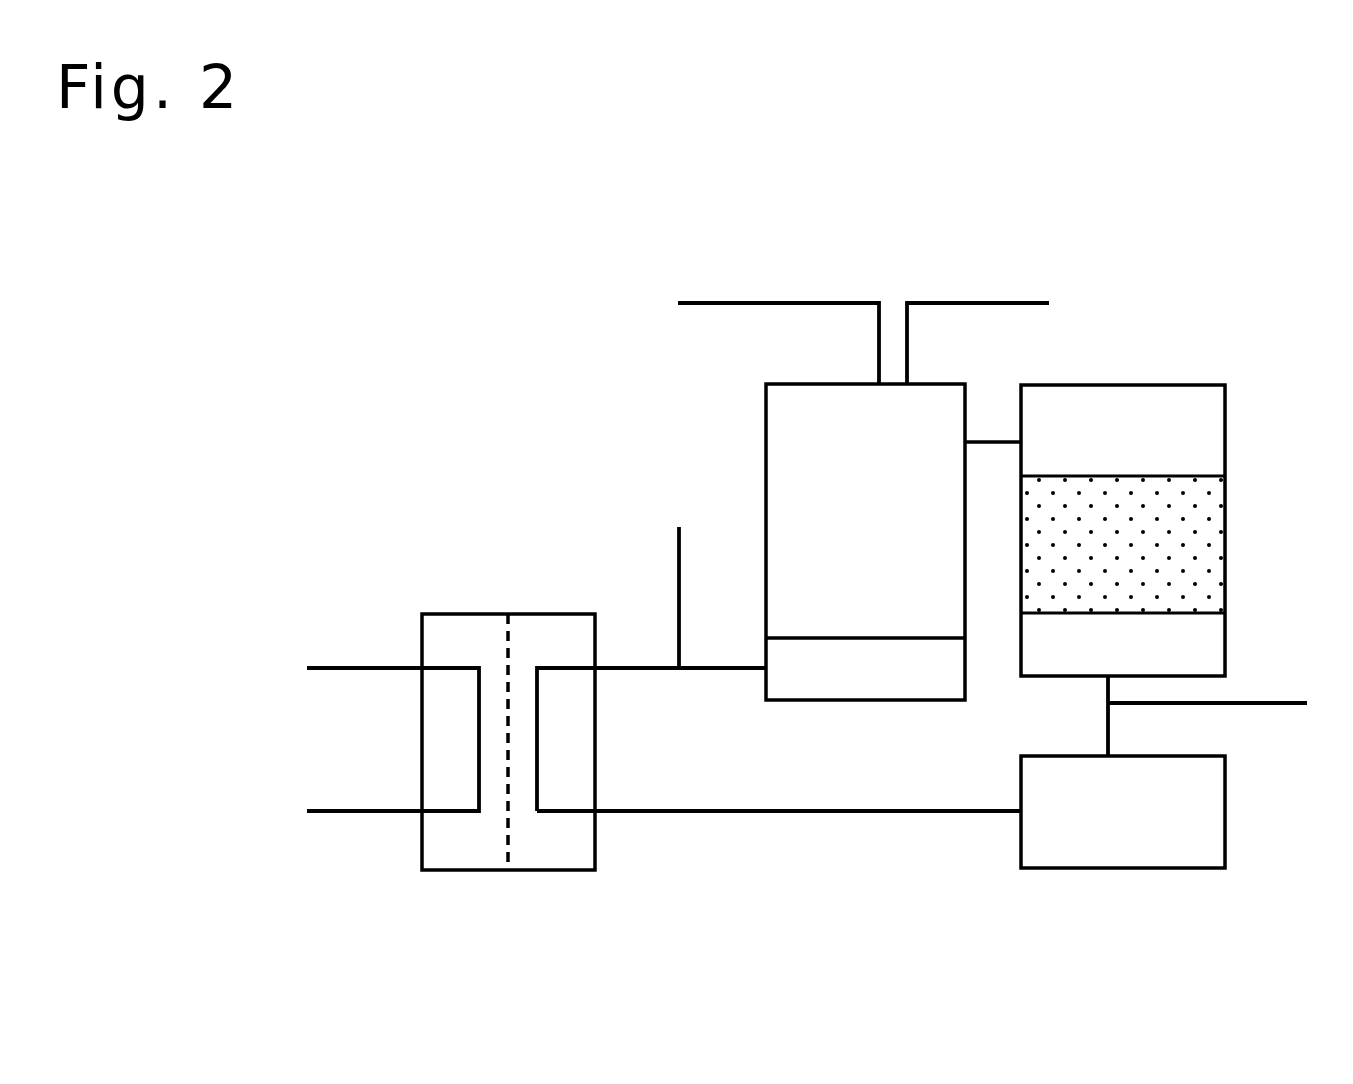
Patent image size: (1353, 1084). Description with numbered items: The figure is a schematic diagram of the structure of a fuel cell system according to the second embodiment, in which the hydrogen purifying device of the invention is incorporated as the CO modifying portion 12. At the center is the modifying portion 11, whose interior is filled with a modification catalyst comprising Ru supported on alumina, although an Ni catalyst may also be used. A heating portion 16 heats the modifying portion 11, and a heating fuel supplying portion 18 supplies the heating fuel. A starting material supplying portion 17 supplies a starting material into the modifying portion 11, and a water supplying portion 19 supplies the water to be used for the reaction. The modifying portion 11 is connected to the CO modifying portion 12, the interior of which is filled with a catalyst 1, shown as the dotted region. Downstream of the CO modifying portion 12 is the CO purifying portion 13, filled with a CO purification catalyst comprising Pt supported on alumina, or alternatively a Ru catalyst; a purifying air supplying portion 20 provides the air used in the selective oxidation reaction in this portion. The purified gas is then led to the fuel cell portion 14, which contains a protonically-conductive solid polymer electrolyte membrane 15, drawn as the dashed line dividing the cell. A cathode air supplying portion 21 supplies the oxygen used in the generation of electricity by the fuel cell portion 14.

The catalyst 1 is at (1203, 517).
The modifying portion 11 is at (825, 471).
The CO modifying portion 12 is at (1172, 385).
The CO purifying portion 13 is at (1210, 837).
The fuel cell portion 14 is at (577, 870).
The protonically-conductive solid polymer electrolyte membrane 15 is at (503, 636).
The heating portion 16 is at (880, 677).
The starting material supplying portion 17 is at (759, 302).
The heating fuel supplying portion 18 is at (678, 567).
The water supplying portion 19 is at (978, 303).
The purifying air supplying portion 20 is at (1253, 703).
The cathode air supplying portion 21 is at (355, 811).